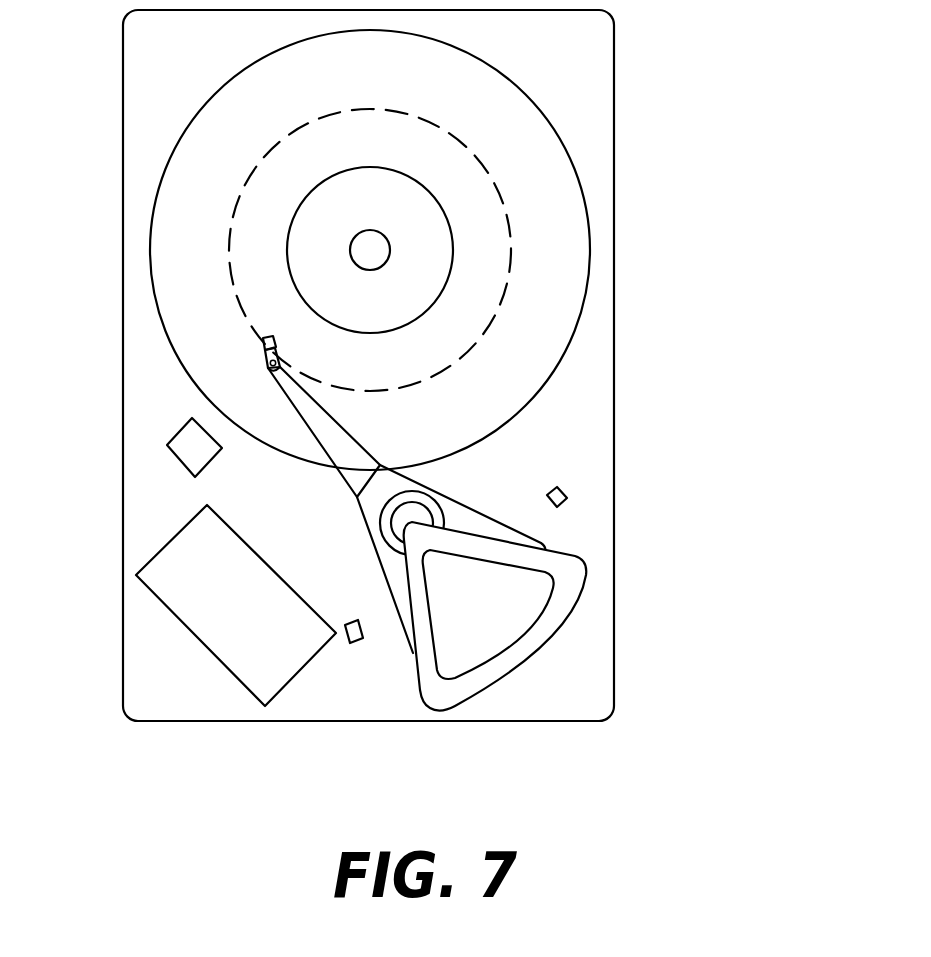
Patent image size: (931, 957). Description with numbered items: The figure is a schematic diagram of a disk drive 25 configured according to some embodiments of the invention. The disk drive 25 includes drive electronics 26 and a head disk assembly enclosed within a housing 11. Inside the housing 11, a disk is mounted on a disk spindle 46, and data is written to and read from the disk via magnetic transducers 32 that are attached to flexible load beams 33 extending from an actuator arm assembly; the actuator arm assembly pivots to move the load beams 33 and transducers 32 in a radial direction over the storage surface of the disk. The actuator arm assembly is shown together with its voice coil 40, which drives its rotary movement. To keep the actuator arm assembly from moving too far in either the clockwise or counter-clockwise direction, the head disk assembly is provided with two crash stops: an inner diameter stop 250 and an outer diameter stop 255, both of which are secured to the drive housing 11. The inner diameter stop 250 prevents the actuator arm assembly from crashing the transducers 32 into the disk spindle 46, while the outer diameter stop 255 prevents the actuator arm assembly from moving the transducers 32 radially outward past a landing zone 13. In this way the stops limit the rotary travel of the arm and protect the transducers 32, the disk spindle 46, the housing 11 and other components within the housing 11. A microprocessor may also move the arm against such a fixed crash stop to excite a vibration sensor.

The disk drive 25 is at (408, 405).
The housing 11 is at (614, 447).
The disk spindle 46 is at (377, 254).
The landing zone 13 is at (178, 450).
The drive electronics 26 is at (197, 611).
The magnetic transducers 32 is at (262, 338).
The flexible load beams 33 is at (320, 430).
The voice coil 40 is at (466, 668).
The inner diameter stop 250 is at (350, 645).
The outer diameter stop 255 is at (567, 497).